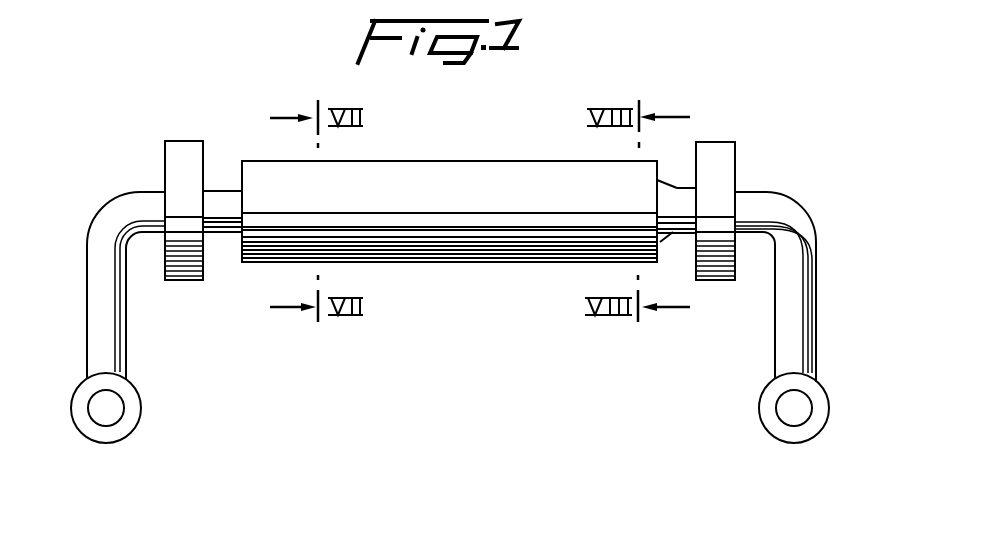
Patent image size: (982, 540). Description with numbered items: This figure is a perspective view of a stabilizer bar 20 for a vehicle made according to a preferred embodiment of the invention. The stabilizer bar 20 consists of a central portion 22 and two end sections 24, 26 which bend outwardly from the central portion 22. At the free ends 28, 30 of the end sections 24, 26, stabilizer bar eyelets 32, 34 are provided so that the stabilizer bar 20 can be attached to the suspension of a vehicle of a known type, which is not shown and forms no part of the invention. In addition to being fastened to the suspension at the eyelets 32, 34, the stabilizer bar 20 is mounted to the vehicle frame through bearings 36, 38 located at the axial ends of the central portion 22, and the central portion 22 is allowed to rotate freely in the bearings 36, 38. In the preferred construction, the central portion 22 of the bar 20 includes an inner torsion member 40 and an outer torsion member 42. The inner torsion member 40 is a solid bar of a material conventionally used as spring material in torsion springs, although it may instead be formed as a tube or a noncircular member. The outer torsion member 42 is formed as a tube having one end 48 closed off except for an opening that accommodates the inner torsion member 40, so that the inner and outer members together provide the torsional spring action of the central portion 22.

The stabilizer bar 20 is at (584, 90).
The central portion 22 is at (228, 165).
The end section 24 is at (785, 317).
The end section 26 is at (112, 312).
The free end 28 is at (793, 428).
The free end 30 is at (110, 433).
The stabilizer bar eyelet 32 is at (785, 403).
The stabilizer bar eyelet 34 is at (118, 408).
The bearing 36 is at (715, 152).
The bearing 38 is at (183, 150).
The inner torsion member 40 is at (668, 215).
The outer torsion member 42 is at (451, 183).
The end 48 is at (649, 179).